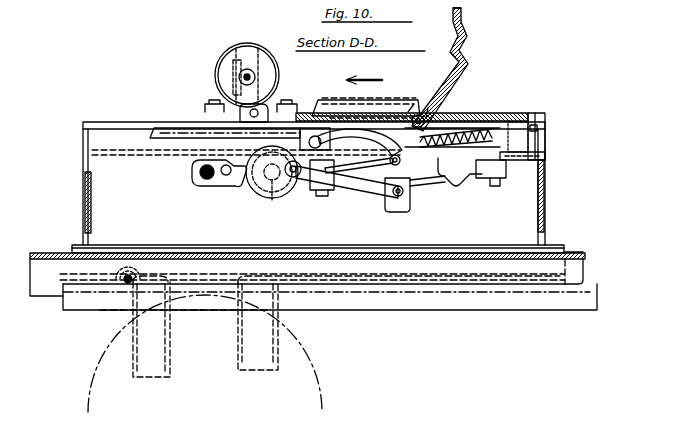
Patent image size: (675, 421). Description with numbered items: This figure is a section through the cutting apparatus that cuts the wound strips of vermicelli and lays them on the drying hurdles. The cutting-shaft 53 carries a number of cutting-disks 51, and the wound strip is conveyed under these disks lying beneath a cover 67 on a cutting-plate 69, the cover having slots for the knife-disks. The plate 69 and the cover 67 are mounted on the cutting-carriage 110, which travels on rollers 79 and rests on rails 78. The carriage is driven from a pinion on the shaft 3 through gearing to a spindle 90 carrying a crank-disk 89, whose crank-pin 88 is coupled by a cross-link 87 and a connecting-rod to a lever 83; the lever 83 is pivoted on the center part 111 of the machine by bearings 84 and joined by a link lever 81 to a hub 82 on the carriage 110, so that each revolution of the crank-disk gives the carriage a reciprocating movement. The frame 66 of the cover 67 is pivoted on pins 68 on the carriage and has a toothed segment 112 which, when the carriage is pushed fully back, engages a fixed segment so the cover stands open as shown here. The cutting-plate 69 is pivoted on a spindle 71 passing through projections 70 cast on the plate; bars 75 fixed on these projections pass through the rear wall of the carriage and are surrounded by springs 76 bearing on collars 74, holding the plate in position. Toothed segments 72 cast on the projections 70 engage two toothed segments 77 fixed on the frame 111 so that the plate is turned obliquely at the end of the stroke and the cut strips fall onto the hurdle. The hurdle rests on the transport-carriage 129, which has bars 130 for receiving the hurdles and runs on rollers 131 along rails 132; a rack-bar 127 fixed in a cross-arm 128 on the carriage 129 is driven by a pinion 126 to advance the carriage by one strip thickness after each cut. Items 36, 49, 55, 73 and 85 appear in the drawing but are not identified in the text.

The shaft 3 is at (204, 184).
The link 36 is at (350, 186).
The bearing 49 is at (322, 140).
The cutting-disks 51 is at (236, 58).
The cutting-shaft 53 is at (239, 73).
The bearing bracket 55 is at (212, 116).
The frame of the cover 66 is at (462, 14).
The cover 67 is at (458, 72).
The pins 68 is at (421, 116).
The cutting-plate 69 is at (325, 96).
The projections 70 is at (390, 116).
The spindle 71 is at (410, 110).
The toothed segments 72 is at (384, 152).
The link 73 is at (372, 163).
The collars 74 is at (440, 135).
The bars 75 is at (537, 128).
The springs 76 is at (458, 128).
The toothed segments 77 is at (194, 174).
The rails 78 is at (183, 138).
The rollers 79 is at (525, 155).
The link lever 81 is at (492, 187).
The hub 82 is at (533, 112).
The lever 83 is at (466, 184).
The bearings 84 is at (398, 212).
The link 85 is at (428, 182).
The cross-link 87 is at (322, 197).
The crank-pin 88 is at (298, 180).
The crank-disk 89 is at (252, 188).
The spindle 90 is at (270, 188).
The cutting-carriage 110 is at (492, 118).
The center part of the machine 111 is at (84, 190).
The toothed segment 112 is at (428, 108).
The pinion 126 is at (110, 345).
The rack-bar 127 is at (380, 292).
The cross-arm 128 is at (122, 287).
The transport-carriage 129 is at (583, 267).
The bars 130 is at (574, 253).
The rollers 131 is at (138, 272).
The rails 132 is at (492, 305).